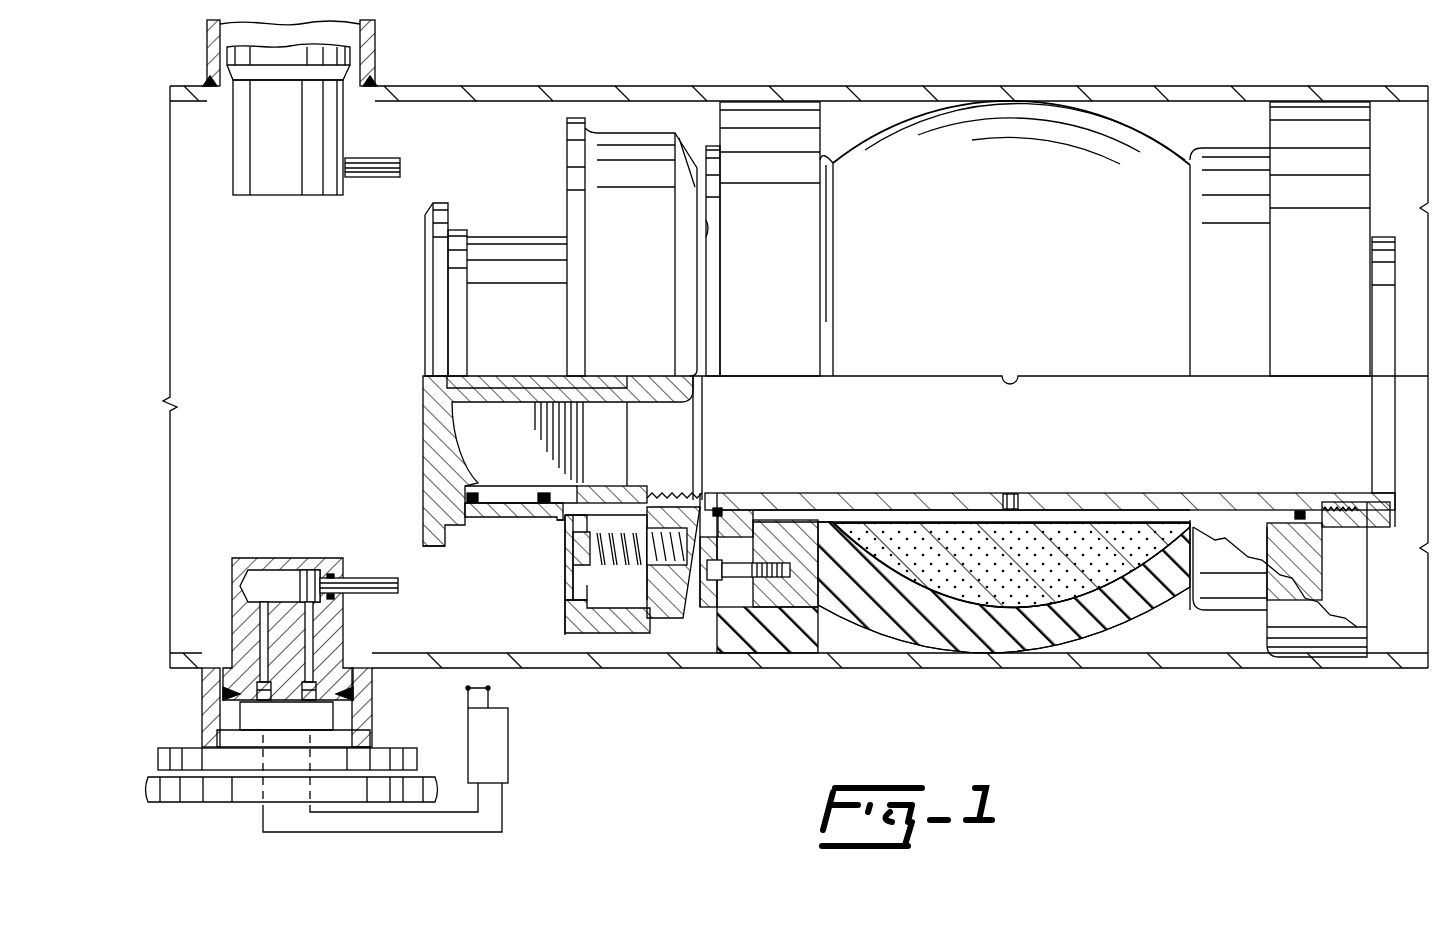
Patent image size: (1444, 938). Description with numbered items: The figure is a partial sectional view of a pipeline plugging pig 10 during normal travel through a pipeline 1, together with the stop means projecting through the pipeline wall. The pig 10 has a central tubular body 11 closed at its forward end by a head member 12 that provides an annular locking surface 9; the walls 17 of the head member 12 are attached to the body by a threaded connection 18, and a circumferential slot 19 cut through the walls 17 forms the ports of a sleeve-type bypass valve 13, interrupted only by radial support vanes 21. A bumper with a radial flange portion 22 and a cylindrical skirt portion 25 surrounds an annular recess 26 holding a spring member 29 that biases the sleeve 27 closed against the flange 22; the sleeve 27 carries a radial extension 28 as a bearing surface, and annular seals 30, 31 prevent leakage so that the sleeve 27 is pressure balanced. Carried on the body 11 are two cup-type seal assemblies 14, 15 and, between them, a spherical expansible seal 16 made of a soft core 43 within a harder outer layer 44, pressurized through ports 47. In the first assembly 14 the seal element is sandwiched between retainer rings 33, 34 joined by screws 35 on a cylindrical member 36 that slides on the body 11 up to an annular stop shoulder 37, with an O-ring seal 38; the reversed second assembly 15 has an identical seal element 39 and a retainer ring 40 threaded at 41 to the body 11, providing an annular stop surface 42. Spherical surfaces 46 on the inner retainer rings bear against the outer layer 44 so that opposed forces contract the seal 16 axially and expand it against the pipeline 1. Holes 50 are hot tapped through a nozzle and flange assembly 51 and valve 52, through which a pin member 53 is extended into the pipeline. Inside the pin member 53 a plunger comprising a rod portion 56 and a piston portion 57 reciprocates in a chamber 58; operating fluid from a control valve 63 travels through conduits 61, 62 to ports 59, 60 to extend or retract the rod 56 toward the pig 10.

The pipeline 1 is at (843, 93).
The annular locking surface 9 is at (445, 548).
The pipeline pig 10 is at (1163, 125).
The central tubular body 11 is at (900, 492).
The head member 12 is at (421, 407).
The bypass valve 13 is at (558, 524).
The seal assembly 14 is at (803, 261).
The seal assembly 15 is at (1343, 196).
The expansible seal 16 is at (995, 153).
The walls 17 is at (635, 488).
The threaded connection 18 is at (680, 488).
The circumferential slot 19 is at (505, 490).
The support vanes 21 is at (612, 424).
The radial flange portion 22 is at (672, 608).
The cylindrical skirt portion 25 is at (614, 612).
The annular recess 26 is at (633, 596).
The sleeve 27 is at (516, 510).
The radial extension 28 is at (571, 578).
The spring member 29 is at (620, 566).
The annular seal 30 is at (472, 490).
The annular seal 31 is at (548, 490).
The retainer ring 33 is at (695, 600).
The retainer ring 34 is at (812, 622).
The screws 35 is at (773, 562).
The cylindrical member 36 is at (820, 510).
The annular stop shoulder 37 is at (719, 506).
The O-ring seal 38 is at (752, 502).
The seal element 39 is at (1310, 642).
The retainer ring 40 is at (1395, 528).
The threaded connection 41 is at (1340, 500).
The annular stop surface 42 is at (1300, 509).
The core 43 is at (1090, 520).
The outer layer 44 is at (1043, 640).
The spherical surfaces 46 is at (830, 600).
The ports 47 is at (1018, 492).
The holes 50 is at (345, 652).
The nozzle and flange assembly 51 is at (200, 706).
The valve 52 is at (192, 800).
The pin member 53 is at (232, 613).
The rod portion 56 is at (380, 594).
The piston portion 57 is at (307, 568).
The chamber 58 is at (268, 570).
The port 59 is at (258, 648).
The port 60 is at (312, 642).
The conduit 61 is at (415, 813).
The conduit 62 is at (352, 833).
The control valve 63 is at (508, 745).